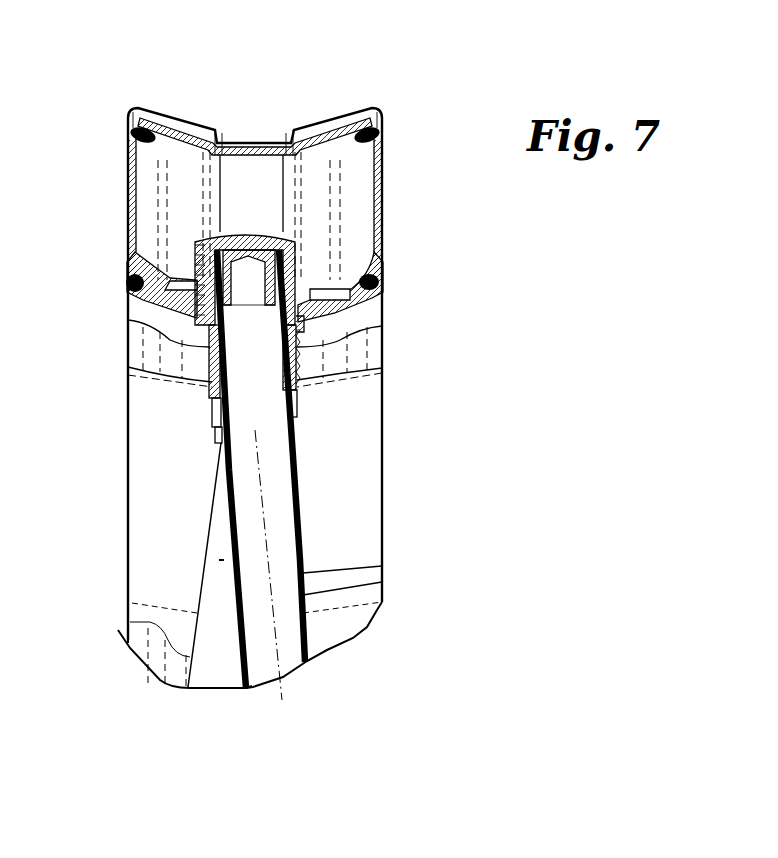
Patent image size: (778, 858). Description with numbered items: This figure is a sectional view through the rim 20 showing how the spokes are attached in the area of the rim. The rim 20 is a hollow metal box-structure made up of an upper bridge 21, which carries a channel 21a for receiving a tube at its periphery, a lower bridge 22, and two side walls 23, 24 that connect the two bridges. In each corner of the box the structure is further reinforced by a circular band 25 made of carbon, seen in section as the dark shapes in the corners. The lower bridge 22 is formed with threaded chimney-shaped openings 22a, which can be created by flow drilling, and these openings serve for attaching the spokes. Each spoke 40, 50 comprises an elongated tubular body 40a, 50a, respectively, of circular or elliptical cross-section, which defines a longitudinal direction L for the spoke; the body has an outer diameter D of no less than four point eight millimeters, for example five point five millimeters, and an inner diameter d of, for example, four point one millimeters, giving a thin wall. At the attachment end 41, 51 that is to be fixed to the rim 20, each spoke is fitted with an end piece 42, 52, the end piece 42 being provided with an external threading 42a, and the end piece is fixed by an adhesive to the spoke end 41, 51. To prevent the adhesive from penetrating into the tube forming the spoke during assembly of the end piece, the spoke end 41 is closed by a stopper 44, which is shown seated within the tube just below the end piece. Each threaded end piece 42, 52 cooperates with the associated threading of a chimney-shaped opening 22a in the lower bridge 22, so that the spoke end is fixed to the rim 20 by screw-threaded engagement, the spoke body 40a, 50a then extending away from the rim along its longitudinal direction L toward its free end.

The rim 20 is at (295, 373).
The upper bridge 21 is at (303, 147).
The channel 21a is at (201, 123).
The lower bridge 22 is at (170, 307).
The threaded chimney-shaped opening 22a is at (310, 313).
The side wall 23 is at (130, 223).
The side wall 24 is at (350, 250).
The circular band 25 is at (370, 140).
The spoke 40 is at (364, 469).
The elongated body 40a is at (382, 600).
The attachment end 41 is at (297, 435).
The end piece 42 is at (383, 374).
The external threading 42a is at (304, 333).
The stopper 44 is at (233, 250).
The spoke 50 is at (134, 565).
The elongated body 50a is at (218, 560).
The attachment end 51 is at (222, 488).
The end piece 52 is at (218, 417).
The outer diameter D is at (222, 532).
The inner diameter d is at (243, 577).
The longitudinal direction L is at (300, 684).